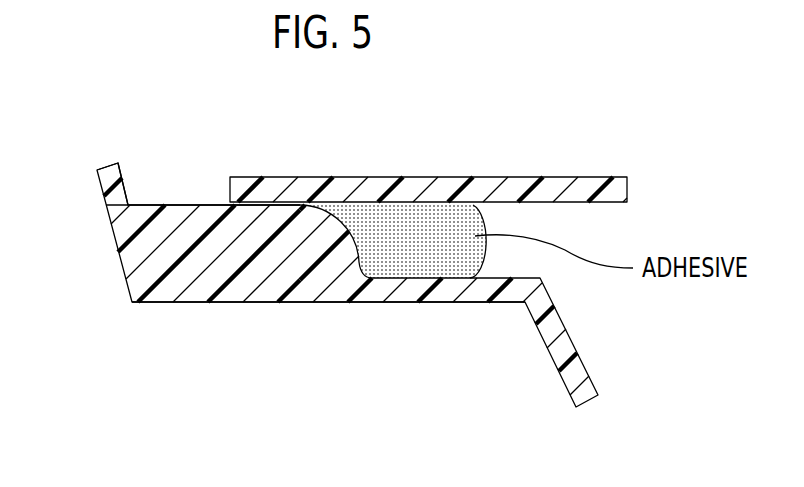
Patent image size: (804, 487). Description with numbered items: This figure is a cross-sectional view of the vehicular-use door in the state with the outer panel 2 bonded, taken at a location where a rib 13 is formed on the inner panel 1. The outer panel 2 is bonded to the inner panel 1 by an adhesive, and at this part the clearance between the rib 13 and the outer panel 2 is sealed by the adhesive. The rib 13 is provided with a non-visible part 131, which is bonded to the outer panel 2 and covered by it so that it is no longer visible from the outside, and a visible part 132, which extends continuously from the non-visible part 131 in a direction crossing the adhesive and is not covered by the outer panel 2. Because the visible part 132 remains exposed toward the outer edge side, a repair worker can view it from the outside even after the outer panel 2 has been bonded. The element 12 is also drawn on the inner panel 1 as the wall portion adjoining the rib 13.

The inner panel 1 is at (315, 270).
The outer panel 2 is at (556, 188).
The side wall tab 12 is at (108, 168).
The rib 13 is at (317, 330).
The non-visible part 131 is at (414, 305).
The visible part 132 is at (175, 248).